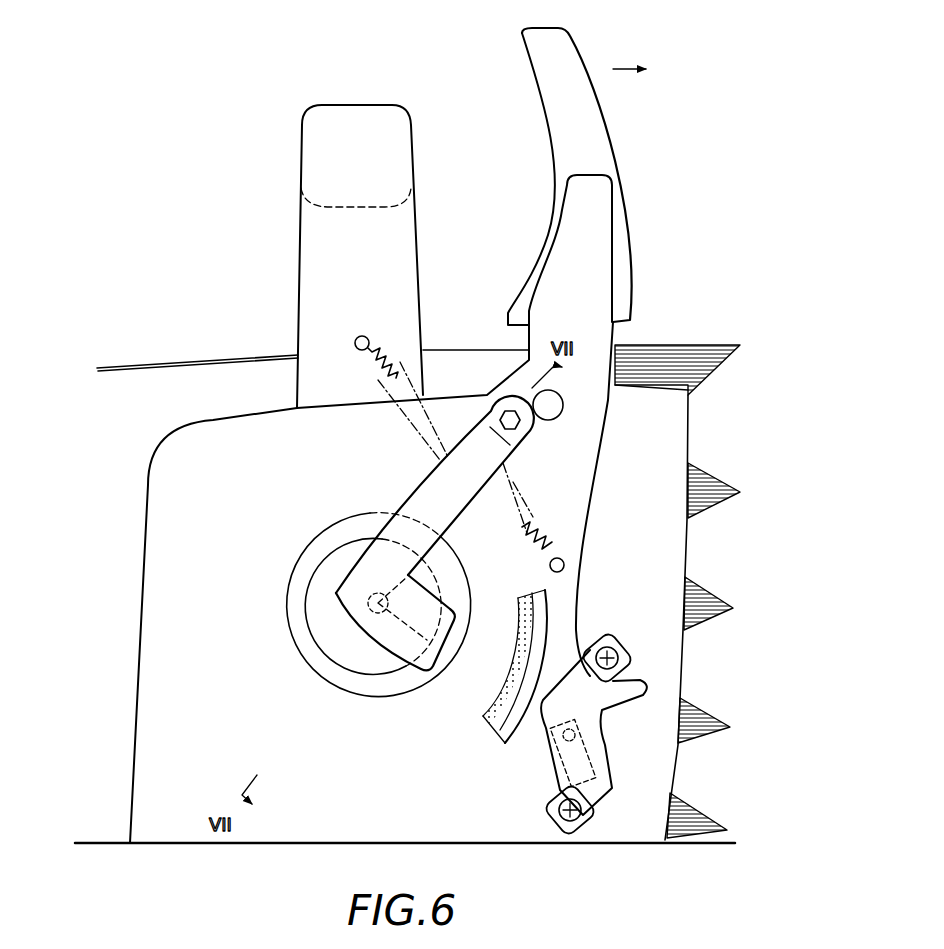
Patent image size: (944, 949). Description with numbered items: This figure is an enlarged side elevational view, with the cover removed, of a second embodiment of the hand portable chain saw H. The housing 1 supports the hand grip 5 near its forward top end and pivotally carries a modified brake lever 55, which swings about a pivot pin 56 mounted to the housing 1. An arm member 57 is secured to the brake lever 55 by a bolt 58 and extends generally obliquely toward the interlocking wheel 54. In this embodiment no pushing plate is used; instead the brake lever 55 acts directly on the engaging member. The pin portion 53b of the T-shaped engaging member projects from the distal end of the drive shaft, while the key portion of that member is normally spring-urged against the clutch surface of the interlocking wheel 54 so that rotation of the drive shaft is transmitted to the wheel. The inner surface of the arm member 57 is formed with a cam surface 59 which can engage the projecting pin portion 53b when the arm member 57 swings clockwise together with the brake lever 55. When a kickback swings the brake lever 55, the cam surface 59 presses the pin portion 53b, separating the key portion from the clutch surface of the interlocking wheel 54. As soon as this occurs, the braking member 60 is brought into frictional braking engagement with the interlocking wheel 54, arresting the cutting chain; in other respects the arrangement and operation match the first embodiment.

The housing 1 is at (230, 373).
The chain saw H is at (160, 345).
The hand grip 5 is at (375, 128).
The brake lever 55 is at (597, 265).
The pivot pin 56 is at (560, 403).
The bolt 58 is at (506, 411).
The arm member 57 is at (430, 497).
The interlocking wheel 54 is at (332, 673).
The pin portion 53b is at (378, 603).
The cam surface 59 is at (380, 612).
The braking member 60 is at (505, 702).